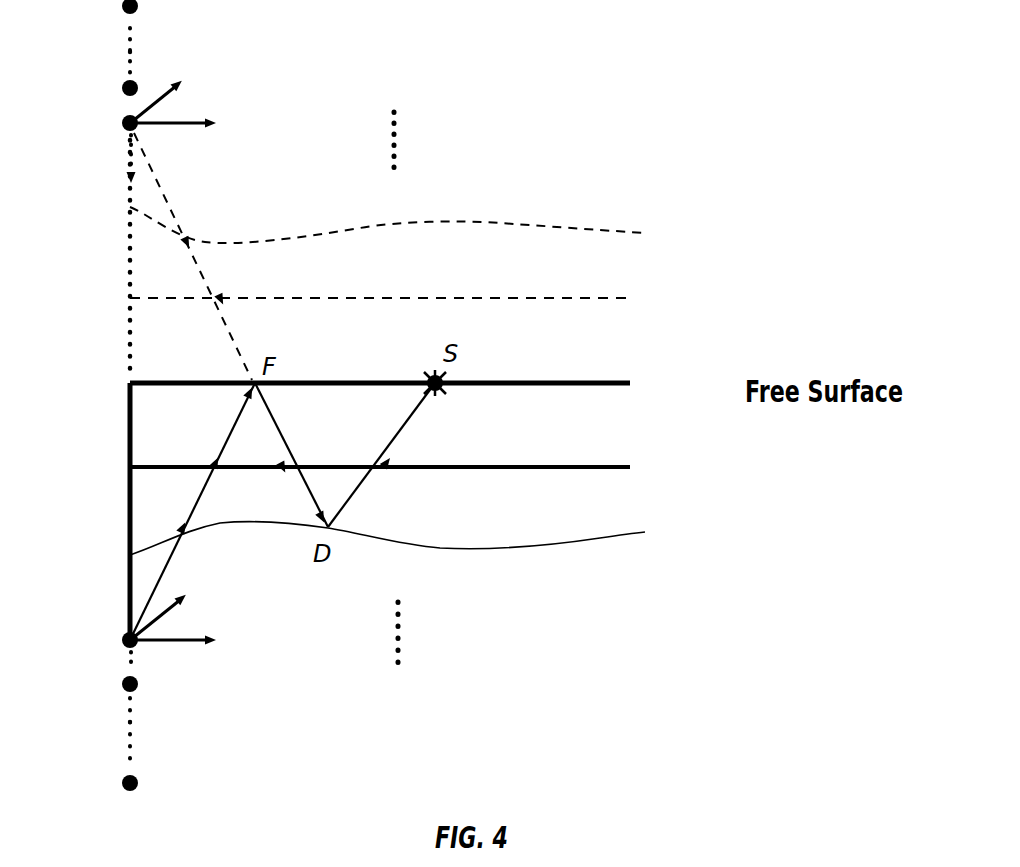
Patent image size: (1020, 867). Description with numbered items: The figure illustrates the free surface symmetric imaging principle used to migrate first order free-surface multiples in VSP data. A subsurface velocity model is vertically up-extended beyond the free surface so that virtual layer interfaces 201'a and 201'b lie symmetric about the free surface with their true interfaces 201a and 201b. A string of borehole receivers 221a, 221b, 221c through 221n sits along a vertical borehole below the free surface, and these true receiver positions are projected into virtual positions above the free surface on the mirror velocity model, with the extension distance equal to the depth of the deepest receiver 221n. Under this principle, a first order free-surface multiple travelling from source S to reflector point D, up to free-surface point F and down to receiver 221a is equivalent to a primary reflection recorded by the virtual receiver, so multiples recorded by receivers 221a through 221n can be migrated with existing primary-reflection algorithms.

The borehole receiver 221a is at (132, 392).
The borehole receiver 221b is at (81, 391).
The borehole receiver 221c is at (78, 393).
The borehole receiver 221n is at (81, 395).
The virtual layer interface 201'b is at (423, 228).
The virtual layer interface 201'a is at (424, 309).
The true layer interface 201a is at (414, 460).
The true layer interface 201b is at (414, 537).